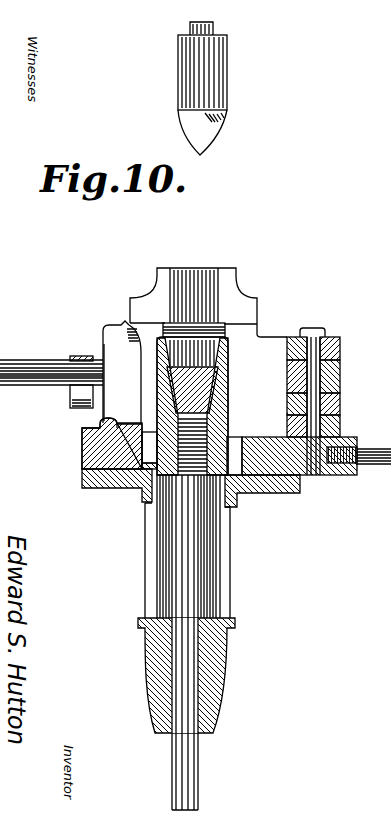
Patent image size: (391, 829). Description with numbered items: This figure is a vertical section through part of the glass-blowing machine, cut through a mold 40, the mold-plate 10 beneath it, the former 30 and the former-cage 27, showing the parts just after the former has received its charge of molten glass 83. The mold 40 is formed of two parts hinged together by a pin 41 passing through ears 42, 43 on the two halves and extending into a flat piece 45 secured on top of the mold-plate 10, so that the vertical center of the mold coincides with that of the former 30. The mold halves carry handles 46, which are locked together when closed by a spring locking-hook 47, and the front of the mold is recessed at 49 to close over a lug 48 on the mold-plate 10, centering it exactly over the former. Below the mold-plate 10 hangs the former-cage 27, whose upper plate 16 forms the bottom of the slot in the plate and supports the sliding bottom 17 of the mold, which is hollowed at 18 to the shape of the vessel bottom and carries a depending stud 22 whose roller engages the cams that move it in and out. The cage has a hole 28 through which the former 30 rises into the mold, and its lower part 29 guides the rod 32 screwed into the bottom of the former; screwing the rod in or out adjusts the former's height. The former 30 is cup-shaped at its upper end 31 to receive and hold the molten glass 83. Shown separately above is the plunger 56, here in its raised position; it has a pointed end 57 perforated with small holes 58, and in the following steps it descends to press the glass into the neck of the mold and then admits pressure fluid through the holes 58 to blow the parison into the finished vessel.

The mold-plate 10 is at (82, 459).
The plate 16 is at (100, 489).
The sliding bottom 17 is at (346, 447).
The hollow 18 is at (258, 437).
The depending stud 22 is at (374, 473).
The former-cage 27 is at (231, 560).
The hole 28 is at (238, 498).
The lower part of former-cage 29 is at (228, 672).
The former 30 is at (224, 398).
The cup-shaped upper end 31 is at (228, 352).
The rod 32 is at (200, 765).
The mold 40 is at (186, 302).
The pin 41 is at (313, 331).
The ear 42 is at (341, 348).
The ear 43 is at (341, 375).
The flat piece 45 is at (341, 424).
The handle 46 is at (12, 366).
The spring locking-hook 47 is at (70, 403).
The lug 48 is at (100, 426).
The recess 49 is at (116, 382).
The plunger 56 is at (228, 81).
The pointed end 57 is at (203, 151).
The small hole 58 is at (218, 142).
The molten glass 83 is at (167, 373).